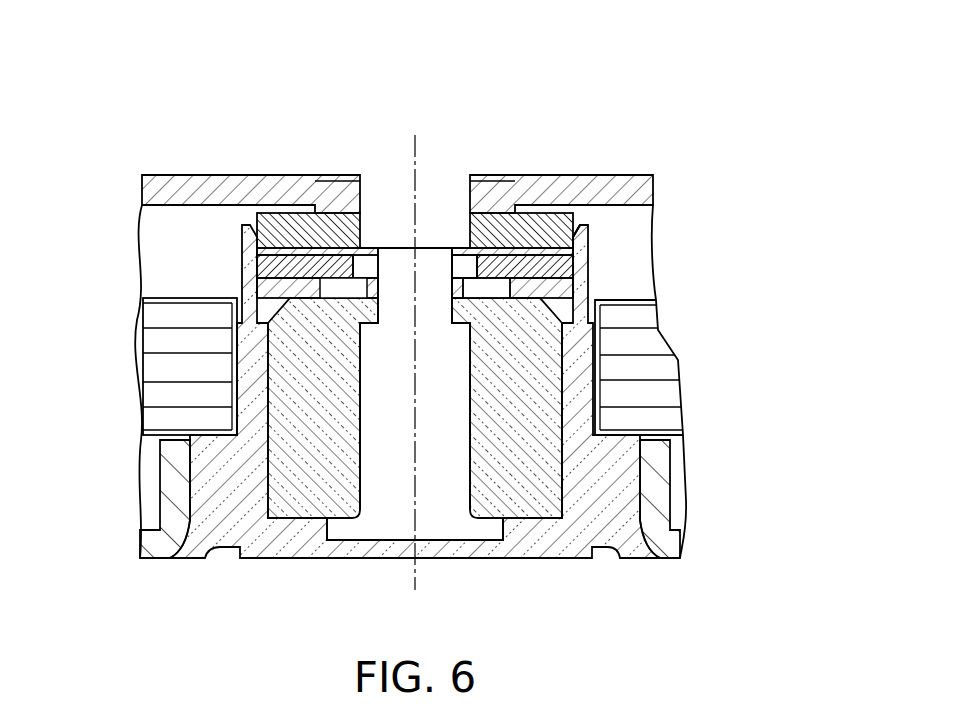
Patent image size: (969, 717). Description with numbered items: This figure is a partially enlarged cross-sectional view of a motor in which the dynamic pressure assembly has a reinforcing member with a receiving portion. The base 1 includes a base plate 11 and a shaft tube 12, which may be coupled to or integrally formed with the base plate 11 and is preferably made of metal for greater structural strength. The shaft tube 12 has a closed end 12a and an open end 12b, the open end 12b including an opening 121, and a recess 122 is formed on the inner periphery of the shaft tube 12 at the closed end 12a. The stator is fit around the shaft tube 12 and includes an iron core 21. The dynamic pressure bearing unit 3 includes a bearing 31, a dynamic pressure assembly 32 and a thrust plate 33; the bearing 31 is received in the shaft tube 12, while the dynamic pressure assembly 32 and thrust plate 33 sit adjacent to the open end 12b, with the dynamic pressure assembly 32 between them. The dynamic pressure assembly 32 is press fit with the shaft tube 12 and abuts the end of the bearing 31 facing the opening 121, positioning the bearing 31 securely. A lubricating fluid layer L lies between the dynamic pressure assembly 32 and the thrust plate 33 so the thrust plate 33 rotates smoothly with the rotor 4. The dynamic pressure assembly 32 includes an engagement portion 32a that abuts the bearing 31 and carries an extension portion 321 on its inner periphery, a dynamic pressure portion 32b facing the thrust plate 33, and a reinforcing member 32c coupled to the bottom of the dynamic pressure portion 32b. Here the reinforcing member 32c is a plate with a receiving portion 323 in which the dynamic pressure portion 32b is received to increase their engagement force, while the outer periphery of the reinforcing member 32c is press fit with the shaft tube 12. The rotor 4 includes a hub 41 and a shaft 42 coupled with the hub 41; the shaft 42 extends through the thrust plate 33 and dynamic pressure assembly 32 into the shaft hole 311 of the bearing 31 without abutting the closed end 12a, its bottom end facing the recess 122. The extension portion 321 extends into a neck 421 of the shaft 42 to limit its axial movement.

The base 1 is at (140, 553).
The base plate 11 is at (670, 557).
The shaft tube 12 is at (600, 363).
The closed end 12a is at (447, 558).
The open end 12b is at (582, 242).
The opening 121 is at (578, 220).
The recess 122 is at (378, 540).
The iron core 21 is at (645, 315).
The dynamic pressure bearing unit 3 is at (250, 74).
The bearing 31 is at (322, 317).
The shaft hole 311 is at (365, 306).
The dynamic pressure assembly 32 is at (193, 121).
The engagement portion 32a is at (267, 287).
The dynamic pressure portion 32b is at (300, 240).
The reinforcing member 32c is at (283, 270).
The extension portion 321 is at (472, 285).
The receiving portion 323 is at (553, 262).
The thrust plate 33 is at (360, 212).
The rotor 4 is at (147, 165).
The hub 41 is at (178, 183).
The shaft 42 is at (453, 458).
The neck 421 is at (322, 317).
The lubricating fluid layer L is at (515, 251).